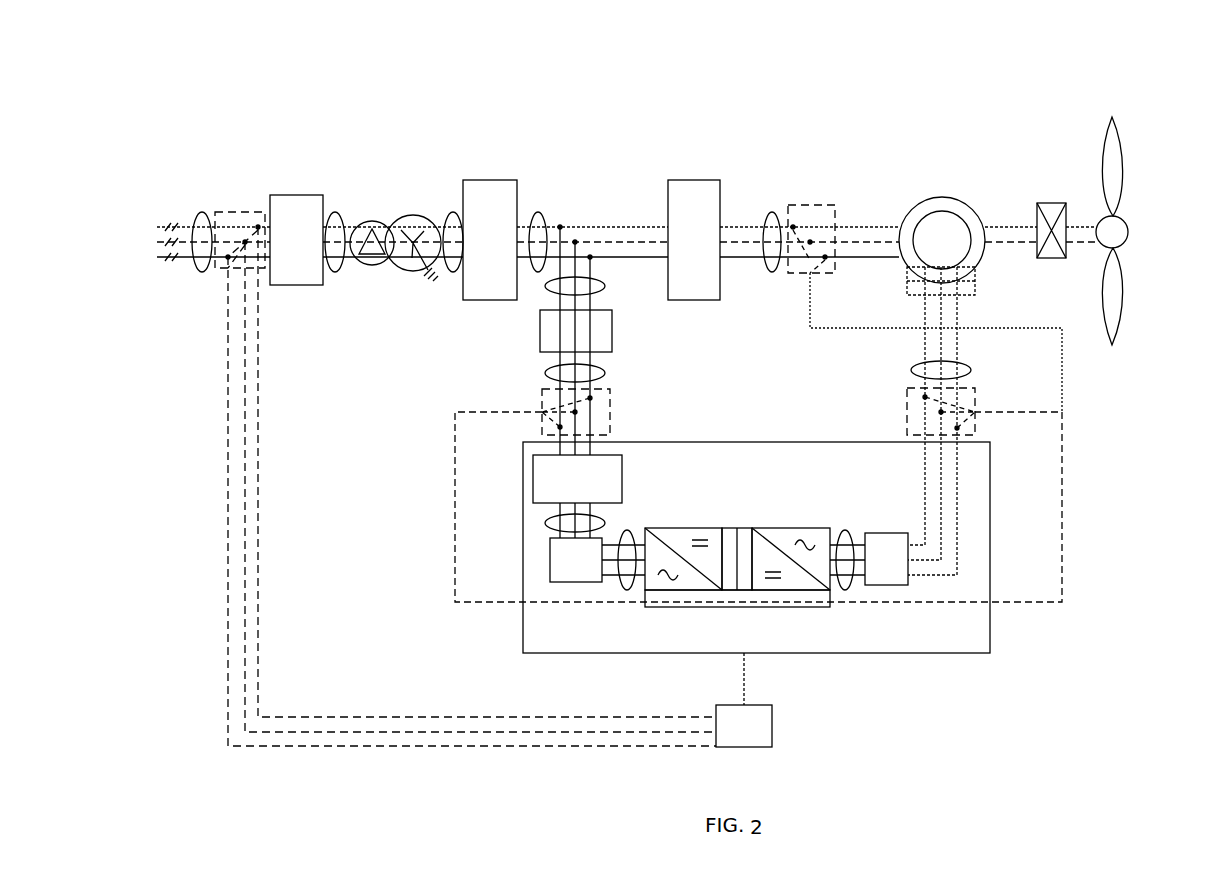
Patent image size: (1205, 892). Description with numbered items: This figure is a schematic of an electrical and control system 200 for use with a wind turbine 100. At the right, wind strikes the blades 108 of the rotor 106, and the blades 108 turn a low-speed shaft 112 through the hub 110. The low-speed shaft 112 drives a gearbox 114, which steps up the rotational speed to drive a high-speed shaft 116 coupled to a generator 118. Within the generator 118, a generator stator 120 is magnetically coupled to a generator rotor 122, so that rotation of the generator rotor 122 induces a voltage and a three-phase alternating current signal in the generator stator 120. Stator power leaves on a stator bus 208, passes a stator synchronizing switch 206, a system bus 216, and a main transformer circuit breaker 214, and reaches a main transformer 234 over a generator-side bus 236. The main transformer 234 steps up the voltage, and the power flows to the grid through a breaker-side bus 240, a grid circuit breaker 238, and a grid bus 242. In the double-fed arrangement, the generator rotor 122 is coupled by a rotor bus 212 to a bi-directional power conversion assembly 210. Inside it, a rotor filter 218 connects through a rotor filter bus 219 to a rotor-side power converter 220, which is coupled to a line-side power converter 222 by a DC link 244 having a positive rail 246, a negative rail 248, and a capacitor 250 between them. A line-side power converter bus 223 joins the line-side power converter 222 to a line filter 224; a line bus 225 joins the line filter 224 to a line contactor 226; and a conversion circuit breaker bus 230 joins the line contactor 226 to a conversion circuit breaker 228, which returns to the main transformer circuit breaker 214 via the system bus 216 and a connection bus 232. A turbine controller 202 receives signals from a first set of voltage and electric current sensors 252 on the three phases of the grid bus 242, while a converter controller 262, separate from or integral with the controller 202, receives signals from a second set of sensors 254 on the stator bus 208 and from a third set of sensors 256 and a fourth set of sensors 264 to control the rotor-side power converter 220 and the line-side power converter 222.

The wind turbine 100 is at (1110, 97).
The rotor 106 is at (1128, 198).
The blades 108 is at (1122, 158).
The hub 110 is at (1130, 228).
The low-speed shaft 112 is at (1070, 228).
The gearbox 114 is at (1045, 205).
The high-speed shaft 116 is at (1000, 227).
The generator 118 is at (938, 162).
The generator stator 120 is at (951, 200).
The generator rotor 122 is at (937, 225).
The electrical and control system 200 is at (228, 112).
The turbine controller 202 is at (764, 740).
The stator synchronizing switch 206 is at (693, 180).
The stator bus 208 is at (772, 213).
The power conversion assembly 210 is at (990, 518).
The rotor bus 212 is at (972, 371).
The main transformer circuit breaker 214 is at (490, 180).
The system bus 216 is at (540, 213).
The rotor filter 218 is at (882, 533).
The rotor filter bus 219 is at (845, 530).
The rotor-side power converter 220 is at (838, 585).
The line-side power converter 222 is at (645, 592).
The line-side power converter bus 223 is at (630, 530).
The line filter 224 is at (550, 560).
The line bus 225 is at (548, 522).
The line contactor 226 is at (533, 480).
The conversion circuit breaker 228 is at (612, 332).
The conversion circuit breaker bus 230 is at (605, 373).
The connection bus 232 is at (605, 286).
The main transformer 234 is at (402, 216).
The generator-side bus 236 is at (453, 212).
The grid circuit breaker 238 is at (293, 195).
The breaker-side bus 240 is at (338, 213).
The grid bus 242 is at (202, 212).
The DC link 244 is at (728, 503).
The positive rail 246 is at (752, 527).
The negative rail 248 is at (740, 590).
The capacitor 250 is at (737, 527).
The first set of voltage and electric current sensors 252 is at (214, 285).
The second set of voltage and electric current sensors 254 is at (828, 200).
The third set of voltage and electric current sensors 256 is at (907, 420).
The converter controller 262 is at (790, 607).
The fourth set of voltage and electric current sensors 264 is at (612, 412).